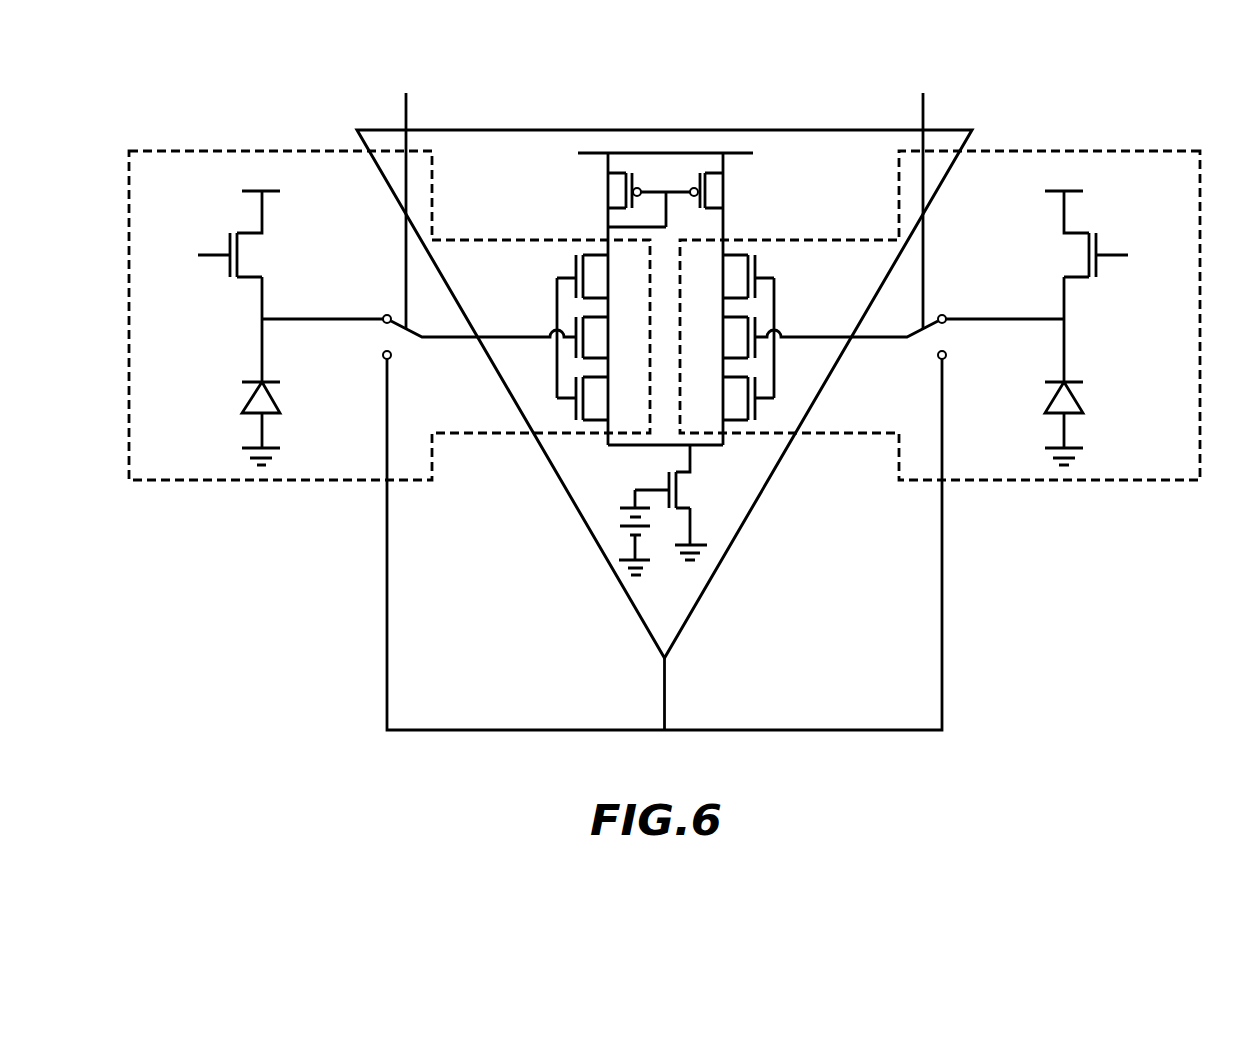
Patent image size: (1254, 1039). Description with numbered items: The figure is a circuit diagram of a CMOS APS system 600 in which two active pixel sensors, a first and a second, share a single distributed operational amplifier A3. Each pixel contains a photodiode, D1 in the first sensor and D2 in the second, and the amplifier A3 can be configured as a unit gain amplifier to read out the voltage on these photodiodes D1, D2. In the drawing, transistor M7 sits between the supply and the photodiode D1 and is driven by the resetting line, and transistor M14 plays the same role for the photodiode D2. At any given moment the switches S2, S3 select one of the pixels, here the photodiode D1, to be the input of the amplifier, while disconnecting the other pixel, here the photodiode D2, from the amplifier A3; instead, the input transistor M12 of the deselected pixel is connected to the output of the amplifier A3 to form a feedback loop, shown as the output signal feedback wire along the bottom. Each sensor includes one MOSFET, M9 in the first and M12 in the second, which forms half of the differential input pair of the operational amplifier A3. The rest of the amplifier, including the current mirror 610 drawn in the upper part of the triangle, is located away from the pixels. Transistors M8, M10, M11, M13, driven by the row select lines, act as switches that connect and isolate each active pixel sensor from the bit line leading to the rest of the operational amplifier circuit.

The CMOS APS system 600 is at (1051, 74).
The current mirror 610 is at (757, 188).
The MOSFET M7 is at (218, 273).
The photodiode D1 is at (279, 423).
The switch S2 is at (466, 337).
The MOSFET M14 is at (1107, 273).
The photodiode D2 is at (1048, 423).
The switch S3 is at (862, 337).
The transistor M8 is at (595, 276).
The MOSFET M9 is at (605, 337).
The transistor M10 is at (602, 349).
The transistor M11 is at (730, 276).
The input transistor M12 is at (721, 337).
The transistor M13 is at (730, 349).
The operational amplifier A3 is at (665, 530).